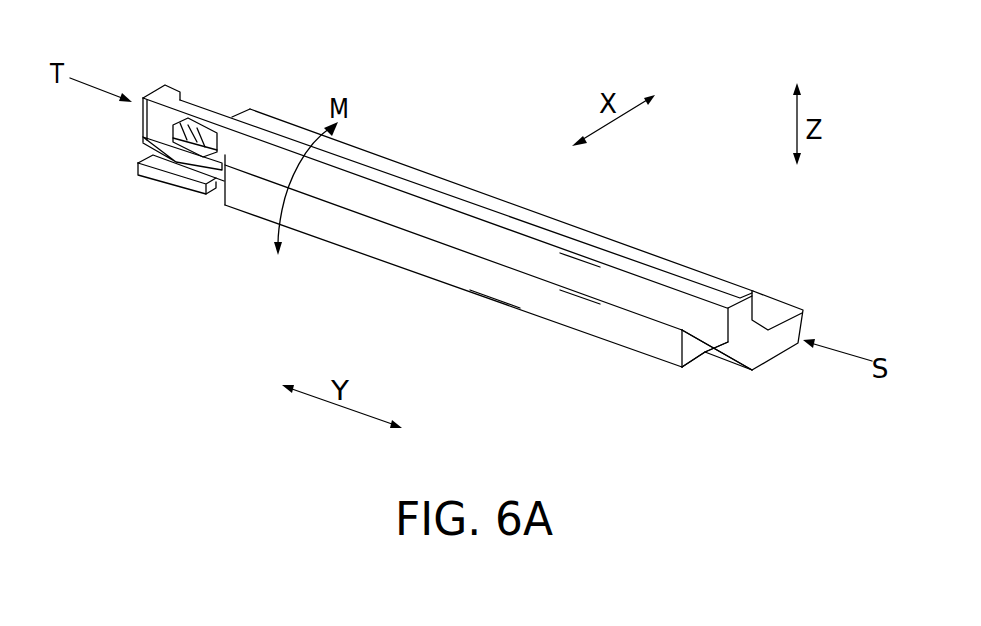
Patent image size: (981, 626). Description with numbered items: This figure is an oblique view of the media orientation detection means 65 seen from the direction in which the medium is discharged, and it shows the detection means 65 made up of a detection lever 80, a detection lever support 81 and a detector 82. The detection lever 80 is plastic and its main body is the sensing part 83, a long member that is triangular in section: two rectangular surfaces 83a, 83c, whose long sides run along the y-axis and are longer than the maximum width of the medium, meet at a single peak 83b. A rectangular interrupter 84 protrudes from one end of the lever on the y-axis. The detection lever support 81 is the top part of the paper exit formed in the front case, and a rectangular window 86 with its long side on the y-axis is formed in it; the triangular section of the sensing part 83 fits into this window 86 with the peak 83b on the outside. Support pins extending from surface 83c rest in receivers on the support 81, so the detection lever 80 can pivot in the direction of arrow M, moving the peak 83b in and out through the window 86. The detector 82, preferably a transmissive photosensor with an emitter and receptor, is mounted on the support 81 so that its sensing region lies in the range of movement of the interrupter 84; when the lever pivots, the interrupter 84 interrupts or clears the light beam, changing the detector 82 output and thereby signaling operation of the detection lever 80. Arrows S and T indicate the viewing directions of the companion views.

The detection lever 80 is at (284, 318).
The detection lever support 81 is at (770, 312).
The detector 82 is at (209, 140).
The sensing part 83 is at (420, 258).
The rectangular surface 83a is at (581, 318).
The peak 83b is at (497, 312).
The rectangular surface 83c is at (686, 372).
The interrupter 84 is at (191, 135).
The window 86 is at (578, 298).
The media orientation detection means 65 is at (531, 111).